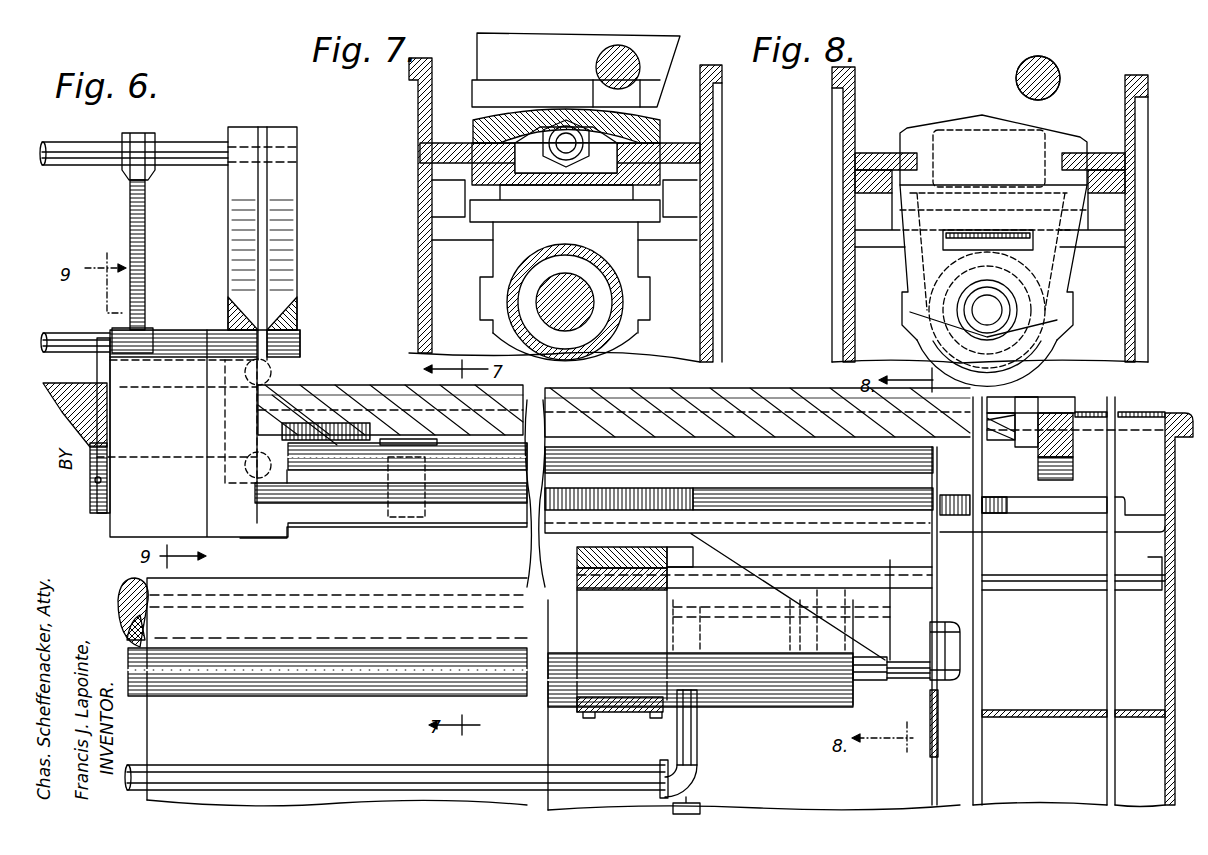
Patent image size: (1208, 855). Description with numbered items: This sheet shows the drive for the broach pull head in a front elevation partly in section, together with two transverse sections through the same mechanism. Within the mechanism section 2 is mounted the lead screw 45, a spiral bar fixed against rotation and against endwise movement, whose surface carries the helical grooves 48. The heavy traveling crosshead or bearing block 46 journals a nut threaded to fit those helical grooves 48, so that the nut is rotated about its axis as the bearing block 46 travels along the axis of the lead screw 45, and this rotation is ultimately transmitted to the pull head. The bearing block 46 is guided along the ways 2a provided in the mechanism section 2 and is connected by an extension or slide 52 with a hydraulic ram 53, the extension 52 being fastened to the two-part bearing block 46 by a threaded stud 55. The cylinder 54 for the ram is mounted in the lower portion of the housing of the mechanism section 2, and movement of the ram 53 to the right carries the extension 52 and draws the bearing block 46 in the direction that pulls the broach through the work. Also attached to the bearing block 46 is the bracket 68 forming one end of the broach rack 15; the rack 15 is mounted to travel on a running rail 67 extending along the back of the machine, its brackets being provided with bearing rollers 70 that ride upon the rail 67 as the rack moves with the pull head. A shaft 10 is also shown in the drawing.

In FIG. 6, the mechanism section 2 is at (1050, 780).
In FIG. 7, the mechanism section 2 is at (708, 270).
In FIG. 8, the mechanism section 2 is at (843, 293).
In FIG. 6, the ways 2a is at (1005, 500).
In FIG. 7, the ways 2a is at (460, 145).
In FIG. 8, the ways 2a is at (882, 152).
In FIG. 6, the drive shaft 10 is at (90, 350).
In FIG. 6, the rack 15 is at (188, 142).
In FIG. 6, the lead screw 45 is at (768, 390).
In FIG. 7, the lead screw 45 is at (604, 58).
In FIG. 8, the lead screw 45 is at (1018, 72).
In FIG. 6, the bearing block 46 is at (185, 352).
In FIG. 6, the helical grooves 48 is at (650, 395).
In FIG. 8, the helical grooves 48 is at (1045, 58).
In FIG. 6, the extension 52 is at (357, 515).
In FIG. 7, the extension 52 is at (655, 125).
In FIG. 8, the extension 52 is at (925, 163).
In FIG. 6, the hydraulic ram 53 is at (867, 672).
In FIG. 7, the hydraulic ram 53 is at (592, 315).
In FIG. 8, the hydraulic ram 53 is at (1023, 325).
In FIG. 6, the cylinder 54 is at (748, 700).
In FIG. 7, the cylinder 54 is at (610, 270).
In FIG. 8, the cylinder 54 is at (1017, 352).
In FIG. 6, the threaded stud 55 is at (425, 515).
In FIG. 7, the threaded stud 55 is at (562, 130).
In FIG. 6, the running rail 67 is at (58, 397).
In FIG. 6, the bracket 68 is at (265, 238).
In FIG. 7, the bracket 68 is at (500, 40).
In FIG. 6, the bearing rollers 70 is at (245, 462).